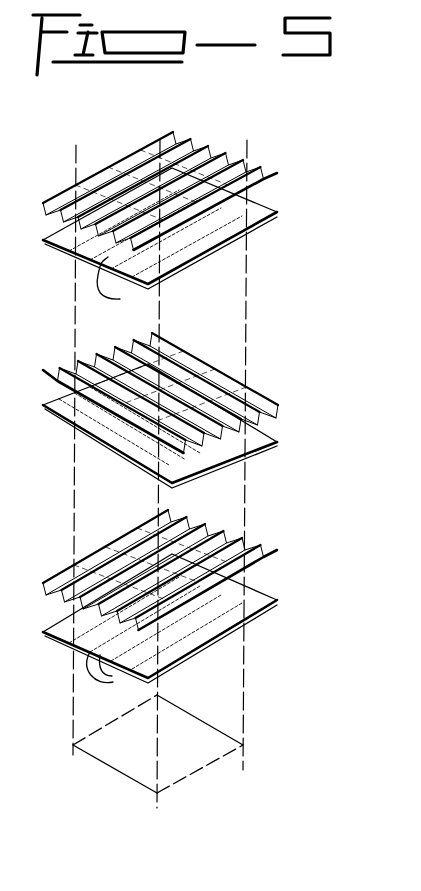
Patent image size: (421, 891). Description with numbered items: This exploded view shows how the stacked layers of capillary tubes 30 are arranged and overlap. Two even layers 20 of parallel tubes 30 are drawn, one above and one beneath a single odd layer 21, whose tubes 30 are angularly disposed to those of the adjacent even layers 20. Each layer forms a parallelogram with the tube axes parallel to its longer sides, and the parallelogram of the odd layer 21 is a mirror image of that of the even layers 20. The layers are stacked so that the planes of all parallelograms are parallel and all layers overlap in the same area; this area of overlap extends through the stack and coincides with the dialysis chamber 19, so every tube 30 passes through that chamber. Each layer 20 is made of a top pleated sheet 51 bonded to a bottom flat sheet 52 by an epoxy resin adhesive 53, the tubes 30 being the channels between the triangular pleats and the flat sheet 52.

The dialysis chamber 19 is at (121, 759).
The even layer of parallel tubes 20 is at (127, 146).
The odd layer of parallel tubes 21 is at (84, 443).
The capillary tubes 30 is at (58, 216).
The top pleated sheet 51 is at (197, 137).
The bottom flat sheet 52 is at (266, 213).
The epoxy resin adhesive 53 is at (119, 477).